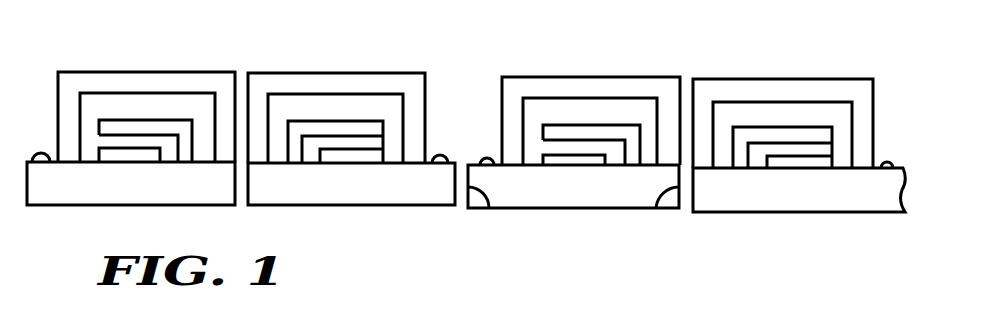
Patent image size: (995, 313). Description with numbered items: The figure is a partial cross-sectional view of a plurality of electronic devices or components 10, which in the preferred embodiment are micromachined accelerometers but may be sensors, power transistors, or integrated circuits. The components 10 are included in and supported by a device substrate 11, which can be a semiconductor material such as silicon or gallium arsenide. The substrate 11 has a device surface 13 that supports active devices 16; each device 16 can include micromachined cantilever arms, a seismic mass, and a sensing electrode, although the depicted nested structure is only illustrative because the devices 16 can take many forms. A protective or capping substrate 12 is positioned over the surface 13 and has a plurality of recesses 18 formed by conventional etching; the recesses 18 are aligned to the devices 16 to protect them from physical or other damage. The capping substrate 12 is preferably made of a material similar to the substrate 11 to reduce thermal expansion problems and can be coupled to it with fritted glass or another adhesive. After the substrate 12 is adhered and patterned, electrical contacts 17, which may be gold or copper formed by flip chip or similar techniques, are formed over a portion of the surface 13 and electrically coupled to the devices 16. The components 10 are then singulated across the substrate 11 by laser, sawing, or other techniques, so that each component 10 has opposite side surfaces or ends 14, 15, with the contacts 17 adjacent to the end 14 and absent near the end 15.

The electronic component 10 is at (112, 42).
The device substrate 11 is at (577, 198).
The capping substrate 12 is at (502, 101).
The device surface 13 is at (648, 165).
The end 14 is at (489, 210).
The end 15 is at (655, 210).
The active device 16 is at (611, 117).
The electrical contact 17 is at (486, 161).
The recess 18 is at (555, 108).